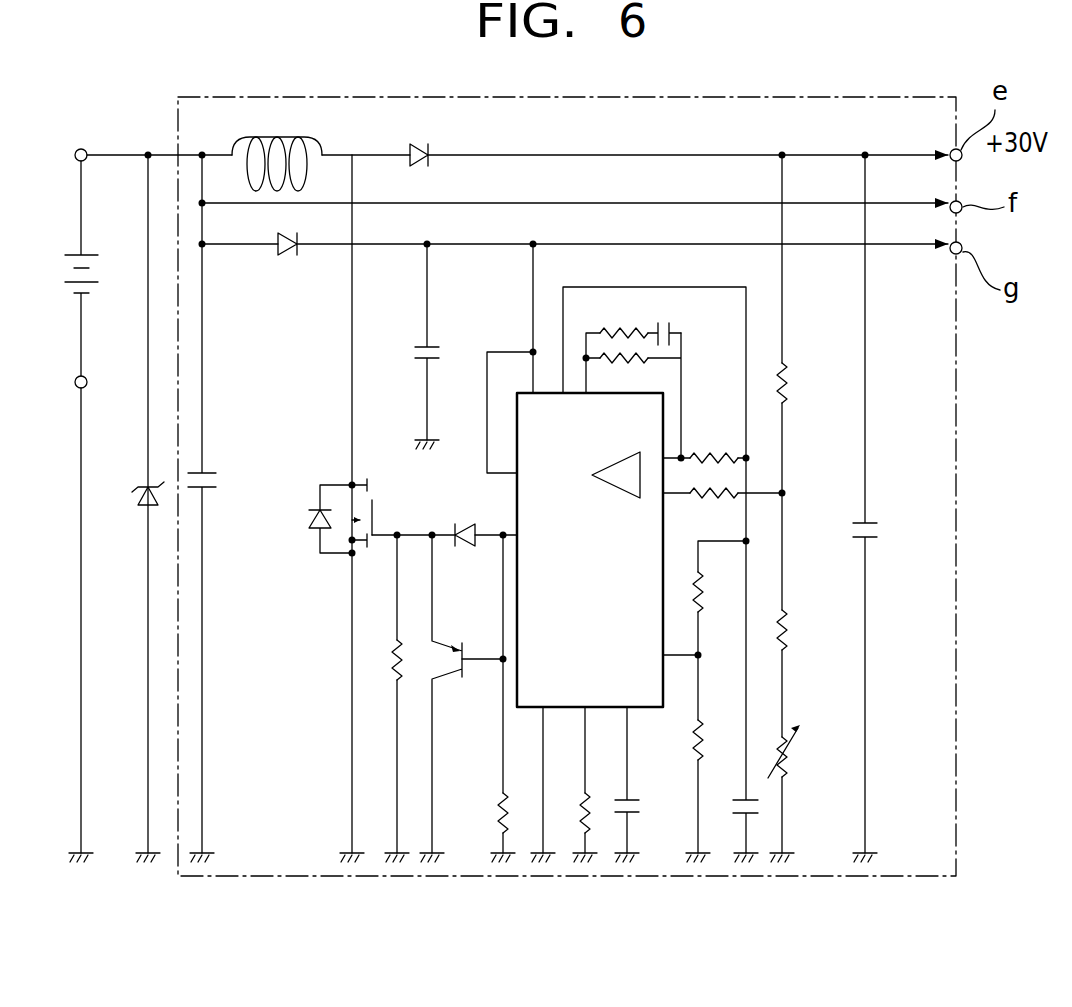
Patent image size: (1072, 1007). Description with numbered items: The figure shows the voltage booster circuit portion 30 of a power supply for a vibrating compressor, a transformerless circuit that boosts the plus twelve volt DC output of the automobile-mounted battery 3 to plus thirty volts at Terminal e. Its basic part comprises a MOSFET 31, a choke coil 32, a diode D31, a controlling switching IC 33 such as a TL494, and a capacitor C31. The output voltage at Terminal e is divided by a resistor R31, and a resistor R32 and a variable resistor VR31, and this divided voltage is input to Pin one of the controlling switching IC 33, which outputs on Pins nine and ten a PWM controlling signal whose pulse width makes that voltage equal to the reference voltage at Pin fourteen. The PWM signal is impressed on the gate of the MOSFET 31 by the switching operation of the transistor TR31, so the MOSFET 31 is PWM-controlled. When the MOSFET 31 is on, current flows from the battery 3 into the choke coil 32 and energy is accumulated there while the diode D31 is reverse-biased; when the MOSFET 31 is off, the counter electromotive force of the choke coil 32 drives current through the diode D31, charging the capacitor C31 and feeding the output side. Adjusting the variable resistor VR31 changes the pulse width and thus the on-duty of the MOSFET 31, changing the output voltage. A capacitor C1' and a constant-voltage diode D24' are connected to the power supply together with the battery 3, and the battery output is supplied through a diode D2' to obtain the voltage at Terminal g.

The battery 3 is at (88, 255).
The voltage booster circuit portion 30 is at (956, 618).
The MOSFET 31 is at (362, 488).
The choke coil 32 is at (323, 142).
The controlling switching IC 33 is at (517, 500).
The diode D31 is at (430, 148).
The diode D2' is at (280, 261).
The zener diode D24' is at (124, 504).
The capacitor C1' is at (215, 504).
The capacitor C31 is at (885, 504).
The transistor TR31 is at (467, 694).
The resistor R31 is at (810, 279).
The resistor R32 is at (810, 630).
The variable resistor VR31 is at (809, 751).